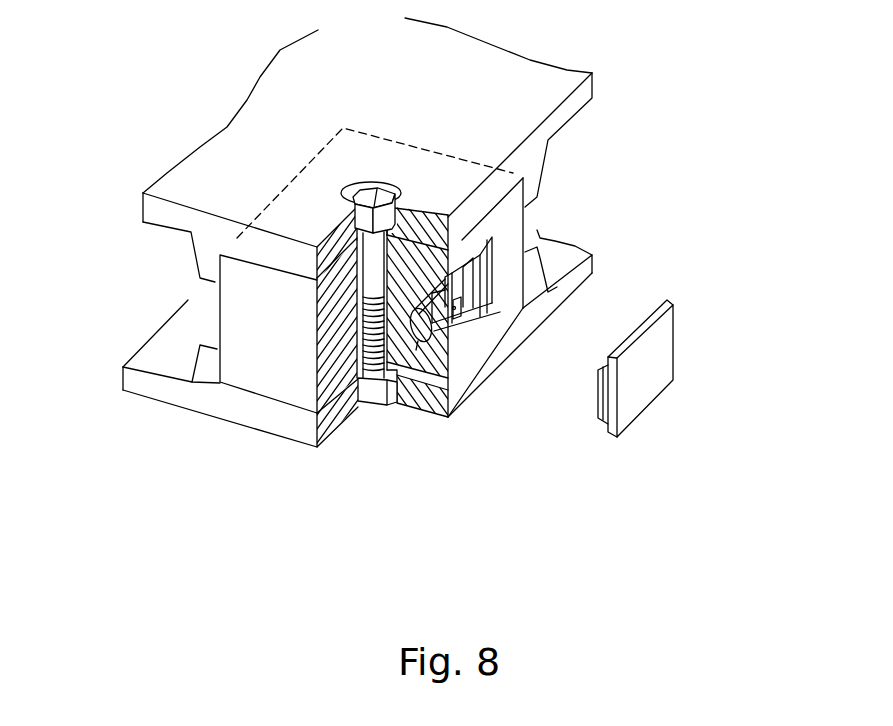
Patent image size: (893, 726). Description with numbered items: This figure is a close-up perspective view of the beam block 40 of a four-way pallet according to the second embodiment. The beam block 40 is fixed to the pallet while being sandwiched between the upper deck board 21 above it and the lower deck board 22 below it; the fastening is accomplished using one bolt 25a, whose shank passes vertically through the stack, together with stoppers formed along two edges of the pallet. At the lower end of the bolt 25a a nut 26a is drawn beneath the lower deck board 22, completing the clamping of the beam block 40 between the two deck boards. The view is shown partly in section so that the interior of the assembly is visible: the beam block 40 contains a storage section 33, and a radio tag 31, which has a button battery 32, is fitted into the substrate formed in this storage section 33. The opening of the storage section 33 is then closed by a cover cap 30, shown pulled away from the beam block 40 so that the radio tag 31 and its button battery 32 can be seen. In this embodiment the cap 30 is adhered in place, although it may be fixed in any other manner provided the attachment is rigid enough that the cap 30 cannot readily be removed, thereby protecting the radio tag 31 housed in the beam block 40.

The upper deck board 21 is at (150, 213).
The lower deck board 22 is at (132, 377).
The bolt 25a is at (363, 185).
The nut 26a is at (377, 405).
The cover cap 30 is at (652, 365).
The radio tag 31 is at (443, 330).
The button battery 32 is at (446, 318).
The storage section 33 is at (437, 289).
The beam block 40 is at (273, 362).